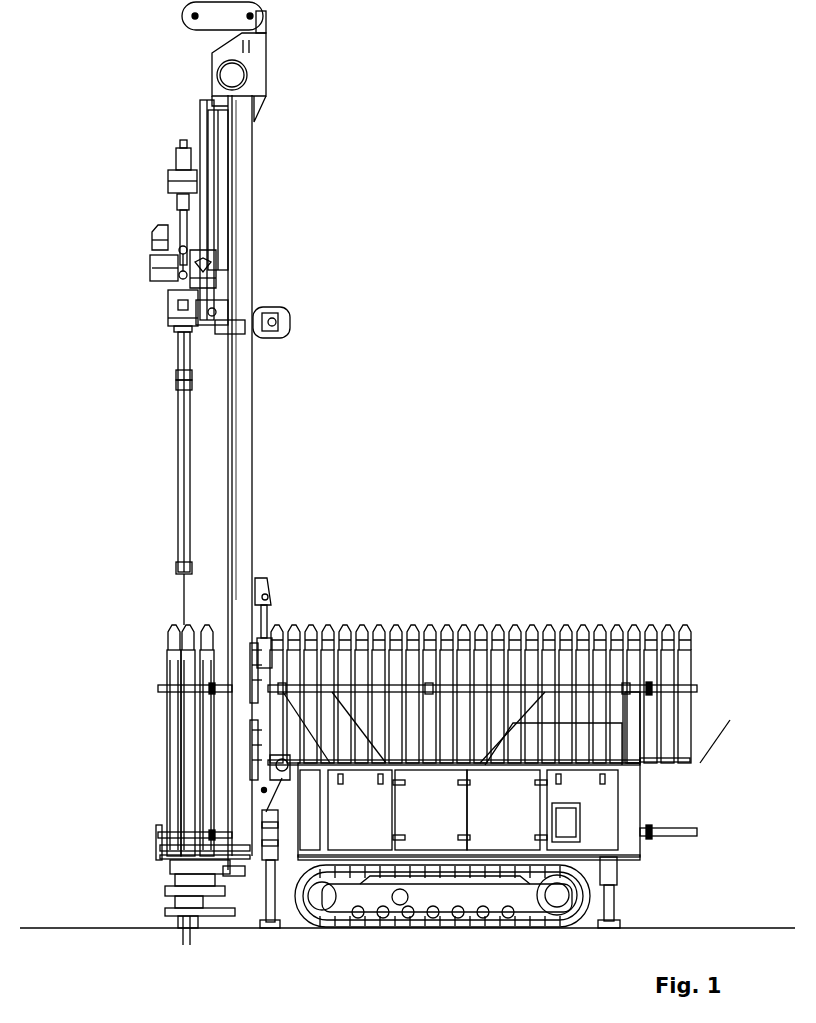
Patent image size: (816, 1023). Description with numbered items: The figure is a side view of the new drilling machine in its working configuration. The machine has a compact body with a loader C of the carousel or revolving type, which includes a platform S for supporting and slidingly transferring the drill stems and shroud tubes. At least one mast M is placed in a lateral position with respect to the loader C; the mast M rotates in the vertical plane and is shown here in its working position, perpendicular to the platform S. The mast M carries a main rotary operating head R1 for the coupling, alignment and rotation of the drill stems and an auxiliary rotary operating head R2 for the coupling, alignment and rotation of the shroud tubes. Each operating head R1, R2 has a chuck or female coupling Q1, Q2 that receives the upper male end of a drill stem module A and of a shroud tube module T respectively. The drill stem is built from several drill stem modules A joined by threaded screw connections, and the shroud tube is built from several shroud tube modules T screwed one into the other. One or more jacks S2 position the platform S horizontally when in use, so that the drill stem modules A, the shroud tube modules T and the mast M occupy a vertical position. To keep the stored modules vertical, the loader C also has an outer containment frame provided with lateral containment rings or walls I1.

The main rotary operating head R1 is at (172, 182).
The chuck or female coupling Q1 is at (175, 205).
The auxiliary rotary operating head R2 is at (170, 312).
The chuck or female coupling Q2 is at (176, 385).
The mast M is at (257, 480).
The drill stem module A is at (170, 632).
The shroud tube module T is at (189, 745).
The lateral containment ring or wall I1 is at (690, 688).
The loader C is at (508, 734).
The platform S is at (645, 870).
The jack S2 is at (272, 925).